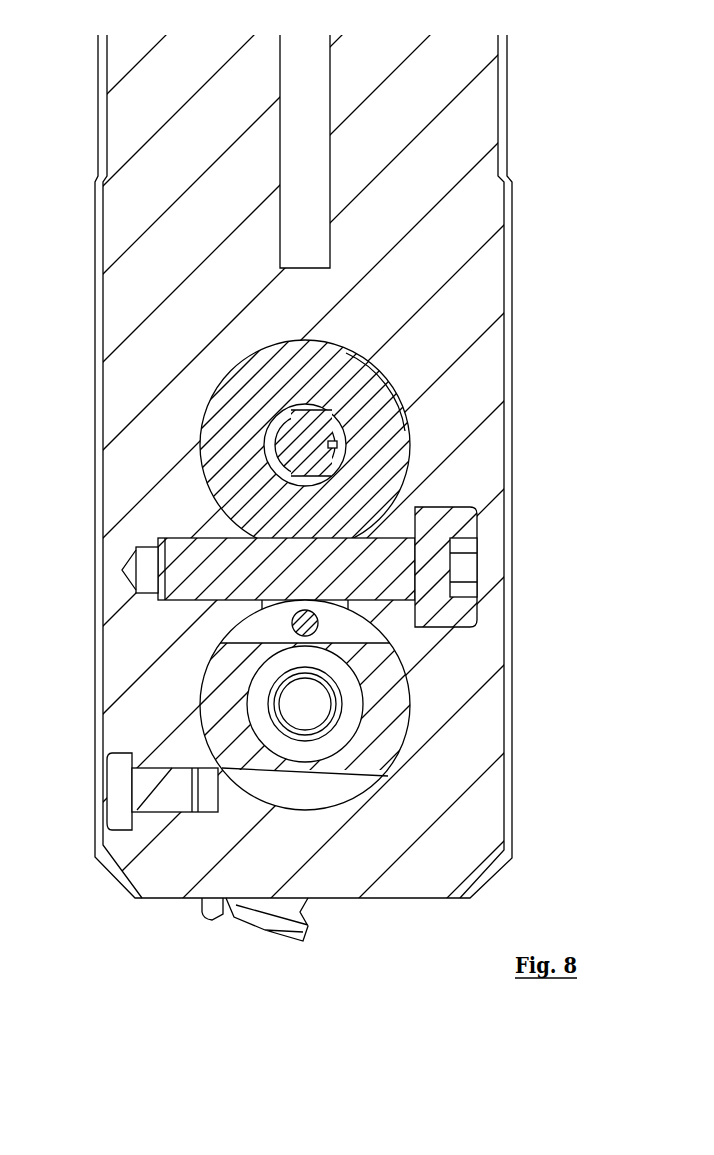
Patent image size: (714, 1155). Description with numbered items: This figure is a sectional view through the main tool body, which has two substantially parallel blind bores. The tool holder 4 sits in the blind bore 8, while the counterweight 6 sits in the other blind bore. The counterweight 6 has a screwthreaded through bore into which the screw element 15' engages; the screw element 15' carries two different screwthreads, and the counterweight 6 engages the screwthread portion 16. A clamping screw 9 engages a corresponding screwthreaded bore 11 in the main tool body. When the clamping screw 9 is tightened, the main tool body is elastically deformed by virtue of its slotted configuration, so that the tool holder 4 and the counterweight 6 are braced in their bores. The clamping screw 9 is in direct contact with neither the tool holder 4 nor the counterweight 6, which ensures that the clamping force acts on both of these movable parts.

The tool holder 4 is at (400, 718).
The counterweight 6 is at (405, 424).
The blind bore 8 is at (305, 703).
The clamping screw 9 is at (440, 562).
The screwthreaded bore 11 is at (150, 596).
The screw element 15' is at (357, 577).
The screwthread portion 16 is at (347, 447).